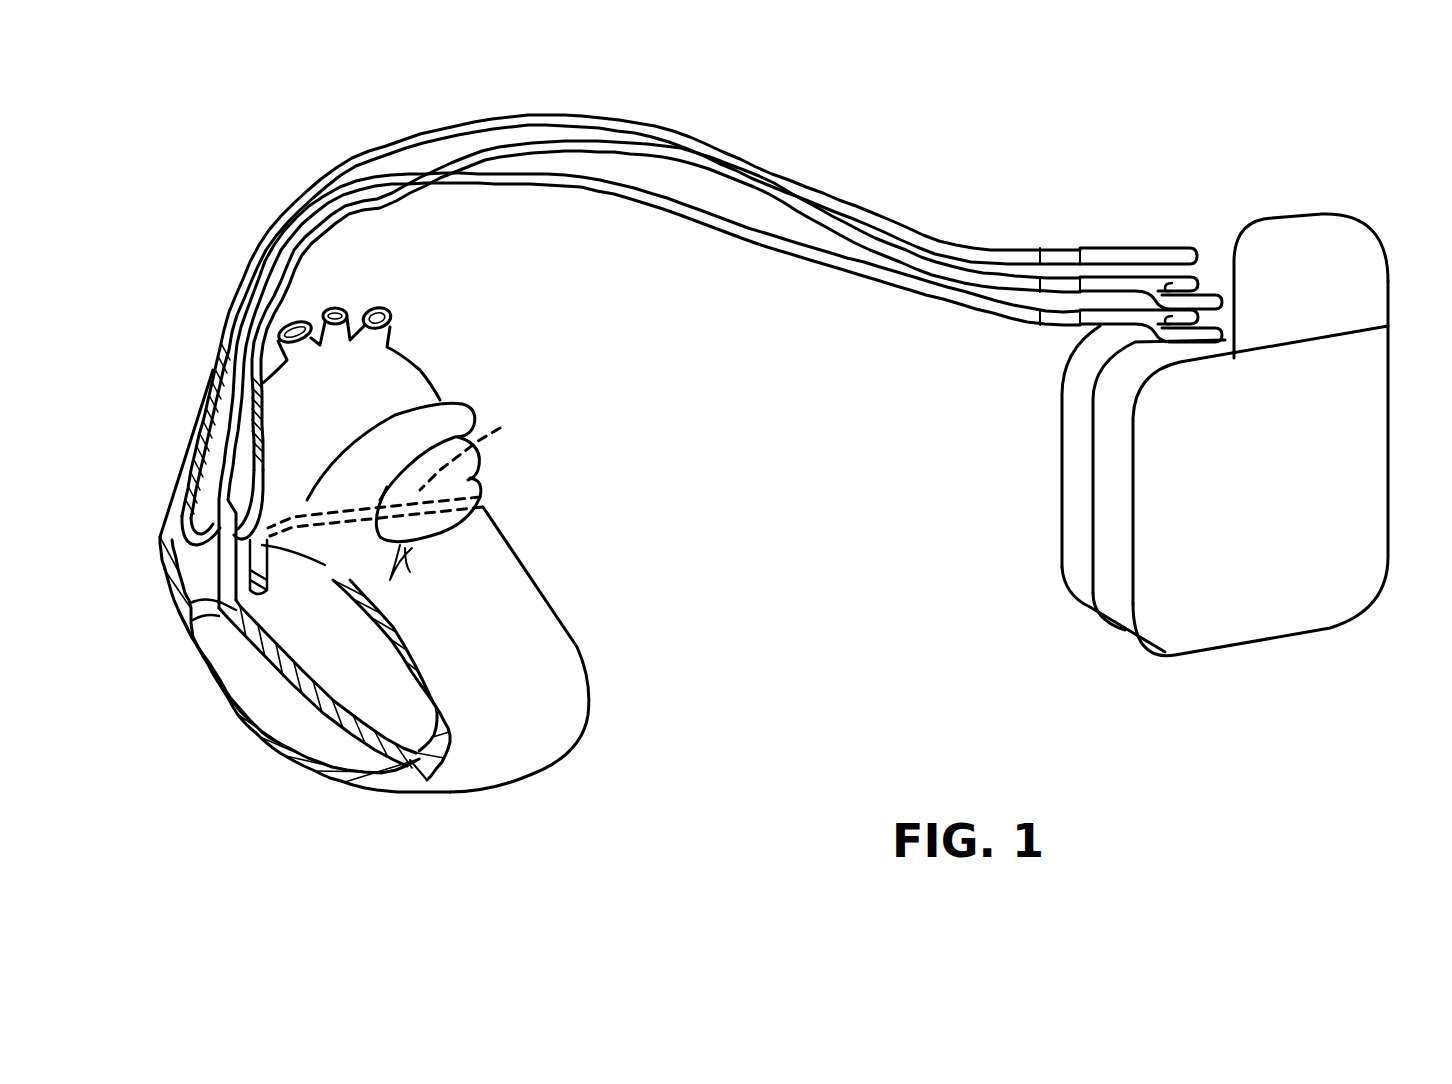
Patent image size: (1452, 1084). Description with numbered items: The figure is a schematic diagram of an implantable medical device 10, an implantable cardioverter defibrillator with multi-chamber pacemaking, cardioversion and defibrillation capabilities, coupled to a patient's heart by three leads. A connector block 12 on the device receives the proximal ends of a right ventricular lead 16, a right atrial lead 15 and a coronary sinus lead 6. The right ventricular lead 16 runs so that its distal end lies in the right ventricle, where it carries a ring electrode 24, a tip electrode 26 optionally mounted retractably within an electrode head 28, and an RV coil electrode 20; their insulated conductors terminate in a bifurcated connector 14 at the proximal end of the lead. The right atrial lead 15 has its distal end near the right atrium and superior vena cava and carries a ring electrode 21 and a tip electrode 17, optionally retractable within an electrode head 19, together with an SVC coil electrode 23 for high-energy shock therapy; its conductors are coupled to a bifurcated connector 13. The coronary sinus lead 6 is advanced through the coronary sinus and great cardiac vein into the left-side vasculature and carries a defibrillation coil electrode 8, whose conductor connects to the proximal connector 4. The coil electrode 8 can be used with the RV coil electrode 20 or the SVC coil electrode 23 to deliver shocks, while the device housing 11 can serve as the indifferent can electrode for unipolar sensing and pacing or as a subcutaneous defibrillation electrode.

The proximal connector 4 is at (1110, 250).
The coronary sinus lead 6 is at (596, 336).
The defibrillation coil electrode 8 is at (394, 472).
The implantable medical device 10 is at (1228, 424).
The device housing 11 is at (1170, 585).
The connector block 12 is at (1297, 228).
The bifurcated connector 13 is at (1133, 285).
The bifurcated connector 14 is at (1100, 320).
The right atrial lead 15 is at (598, 340).
The right ventricular lead 16 is at (648, 514).
The tip electrode 17 is at (257, 487).
The electrode head 19 is at (253, 493).
The RV coil electrode 20 is at (307, 677).
The ring electrode 21 is at (172, 532).
The SVC coil electrode 23 is at (212, 440).
The ring electrode 24 is at (350, 747).
The tip electrode 26 is at (413, 768).
The electrode head 28 is at (397, 745).